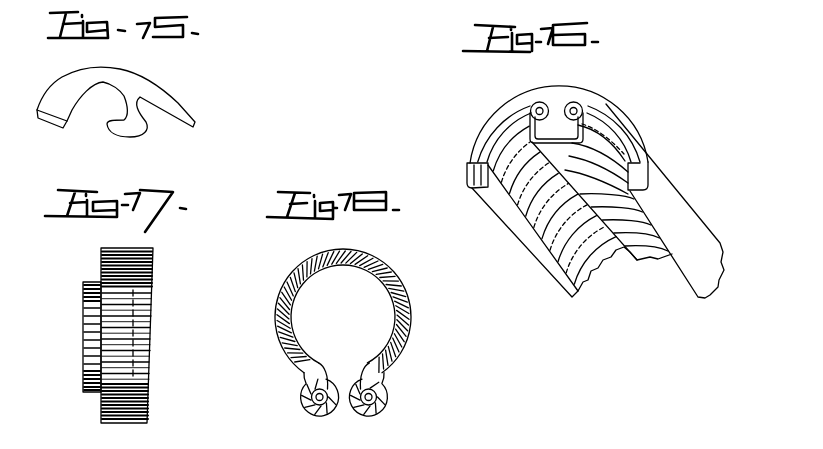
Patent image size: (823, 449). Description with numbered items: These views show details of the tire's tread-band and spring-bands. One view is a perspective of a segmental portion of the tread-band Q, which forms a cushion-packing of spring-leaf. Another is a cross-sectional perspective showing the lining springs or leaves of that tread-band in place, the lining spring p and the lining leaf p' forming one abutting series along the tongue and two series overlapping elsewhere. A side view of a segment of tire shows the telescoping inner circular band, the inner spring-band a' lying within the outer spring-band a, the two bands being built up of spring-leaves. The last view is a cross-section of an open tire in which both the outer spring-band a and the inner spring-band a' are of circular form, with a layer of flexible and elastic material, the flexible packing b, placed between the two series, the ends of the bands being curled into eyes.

In FIG. 15, the tread-band Q is at (116, 102).
In FIG. 16, the tread-band Q is at (577, 192).
In FIG. 16, the lining spring p is at (536, 132).
In FIG. 16, the lining leaf p' is at (456, 167).
In FIG. 17, the outer spring-band a is at (141, 335).
In FIG. 18, the outer spring-band a is at (323, 311).
In FIG. 17, the inner spring-band a' is at (73, 337).
In FIG. 18, the inner spring-band a' is at (343, 314).
In FIG. 18, the flexible packing b is at (408, 320).